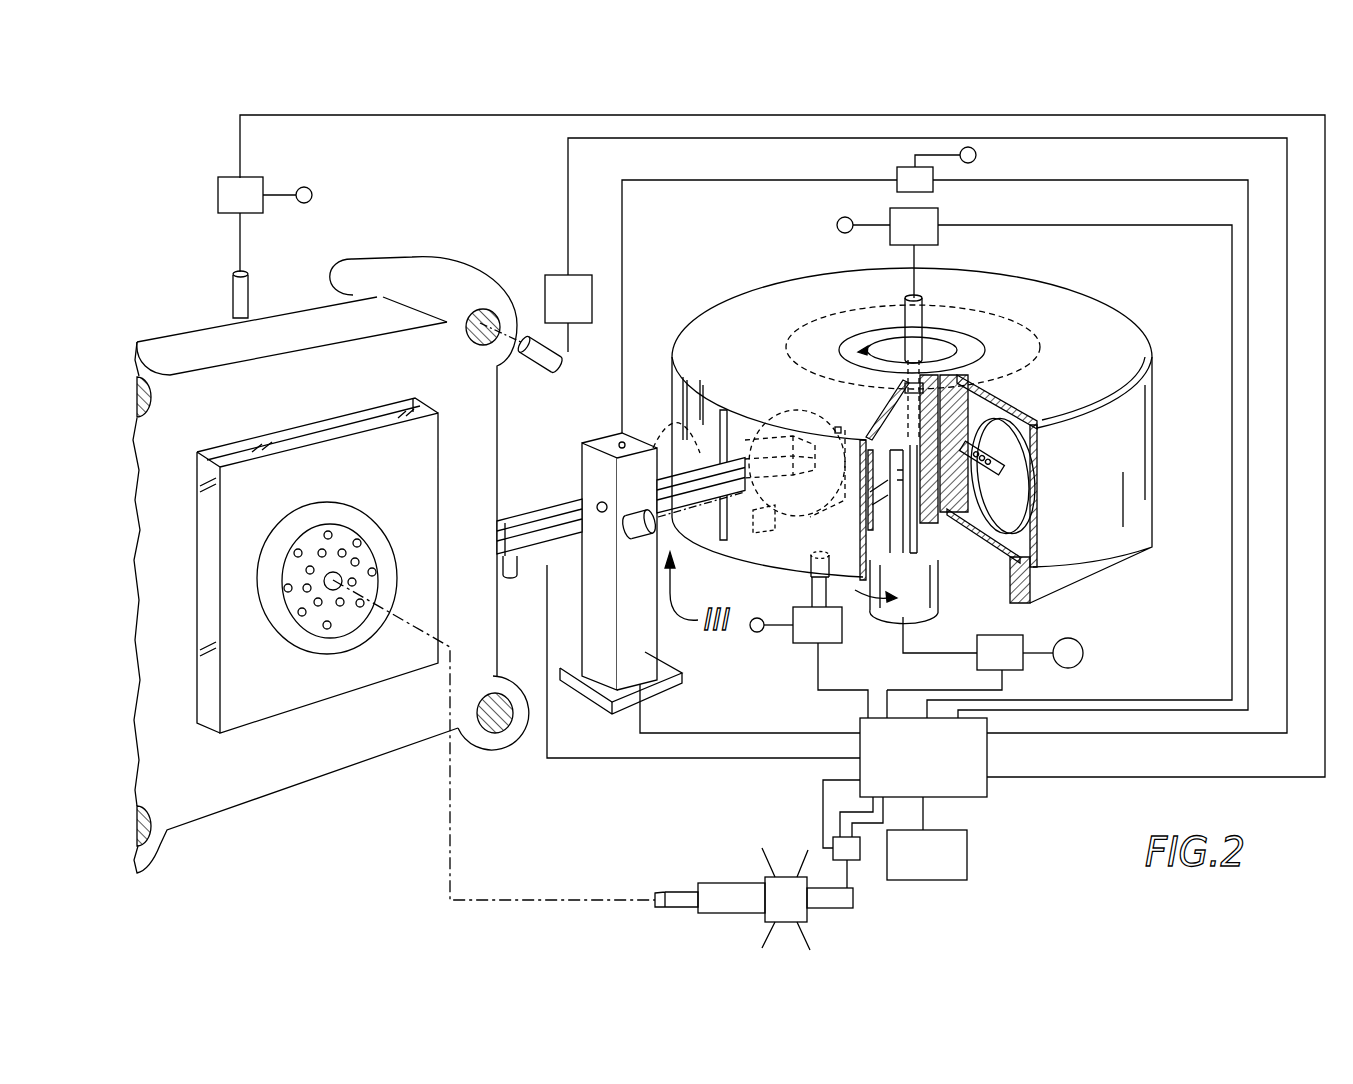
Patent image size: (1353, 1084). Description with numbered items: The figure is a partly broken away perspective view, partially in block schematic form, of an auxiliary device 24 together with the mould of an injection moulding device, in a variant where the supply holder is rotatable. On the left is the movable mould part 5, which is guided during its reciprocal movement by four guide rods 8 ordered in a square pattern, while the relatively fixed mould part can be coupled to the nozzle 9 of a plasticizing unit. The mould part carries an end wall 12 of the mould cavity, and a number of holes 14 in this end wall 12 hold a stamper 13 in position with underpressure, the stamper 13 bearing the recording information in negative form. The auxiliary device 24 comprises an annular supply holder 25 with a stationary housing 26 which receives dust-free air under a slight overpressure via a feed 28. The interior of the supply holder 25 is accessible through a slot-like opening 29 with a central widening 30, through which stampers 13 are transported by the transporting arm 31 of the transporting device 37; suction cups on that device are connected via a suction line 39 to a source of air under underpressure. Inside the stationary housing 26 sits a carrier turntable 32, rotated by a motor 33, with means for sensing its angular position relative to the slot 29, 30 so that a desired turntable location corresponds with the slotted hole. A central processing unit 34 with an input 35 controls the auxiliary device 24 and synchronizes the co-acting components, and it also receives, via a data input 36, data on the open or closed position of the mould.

The mould part 5 is at (343, 670).
The guide rods 8 is at (148, 405).
The nozzle 9 is at (678, 897).
The end wall 12 is at (367, 552).
The stamper 13 is at (756, 437).
The holes 14 is at (306, 570).
The auxiliary device 24 is at (1128, 303).
The annular supply holder 25 is at (752, 300).
The stationary housing 26 is at (1135, 502).
The feed 28 is at (905, 315).
The slot-like opening 29 is at (720, 452).
The central widening 30 is at (705, 508).
The transporting arm 31 is at (548, 528).
The carrier turntable 32 is at (963, 333).
The motor 33 is at (922, 568).
The central processing unit 34 is at (962, 780).
The input 35 is at (955, 850).
The data input 36 is at (853, 852).
The transporting device 37 is at (625, 478).
The suction line 39 is at (663, 428).